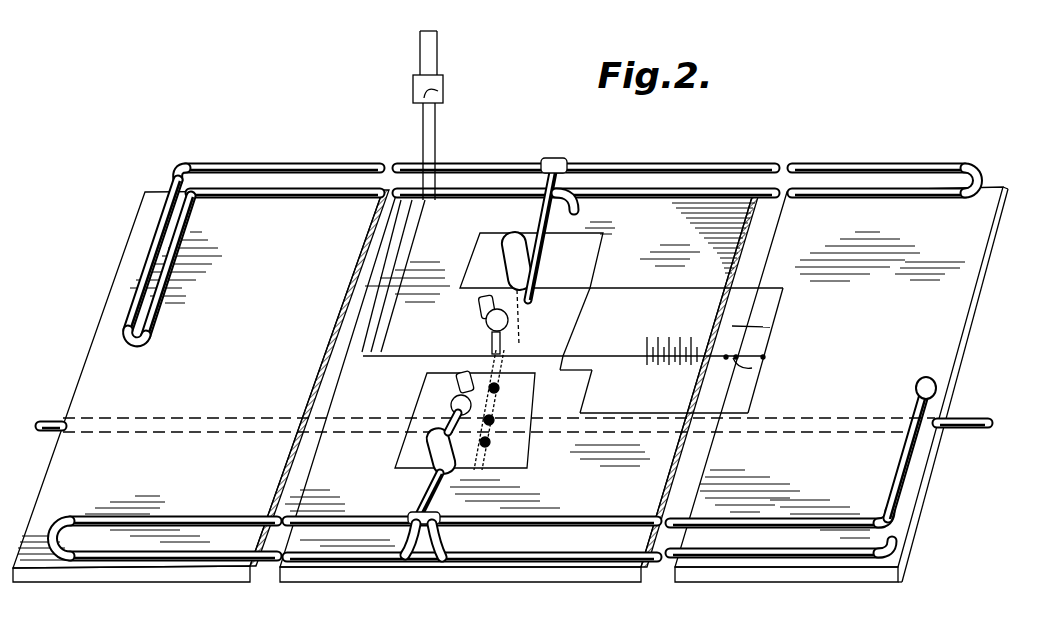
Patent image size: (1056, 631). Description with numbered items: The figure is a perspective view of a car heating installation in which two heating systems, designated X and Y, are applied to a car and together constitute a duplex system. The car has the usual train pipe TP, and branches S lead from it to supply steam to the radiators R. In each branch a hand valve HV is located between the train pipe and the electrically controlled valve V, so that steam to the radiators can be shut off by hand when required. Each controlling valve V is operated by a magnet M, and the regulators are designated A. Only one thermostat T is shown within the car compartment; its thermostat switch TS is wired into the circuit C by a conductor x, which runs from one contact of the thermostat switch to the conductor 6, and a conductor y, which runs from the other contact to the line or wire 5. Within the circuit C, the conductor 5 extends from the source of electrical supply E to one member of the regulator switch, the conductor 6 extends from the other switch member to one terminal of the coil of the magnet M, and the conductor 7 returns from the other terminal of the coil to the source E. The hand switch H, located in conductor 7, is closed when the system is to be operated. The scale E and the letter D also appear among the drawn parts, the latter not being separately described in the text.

The thermostat T is at (439, 67).
The thermostat switch TS is at (440, 93).
The conductor x is at (437, 122).
The conductor y is at (420, 124).
The radiator R is at (656, 163).
The branch S is at (540, 210).
The conductor 6 is at (500, 233).
The regulator A is at (503, 250).
The magnet M is at (480, 312).
The controlling valve V is at (488, 328).
The drive rod D is at (530, 245).
The conductor 5 is at (582, 233).
The conductor 7 is at (550, 290).
The circuit C is at (671, 350).
The hand switch H is at (744, 368).
The source of electrical supply E is at (672, 367).
The hand valve HV is at (500, 398).
The heating system X is at (201, 386).
The heating system Y is at (841, 384).
The train pipe TP is at (980, 415).